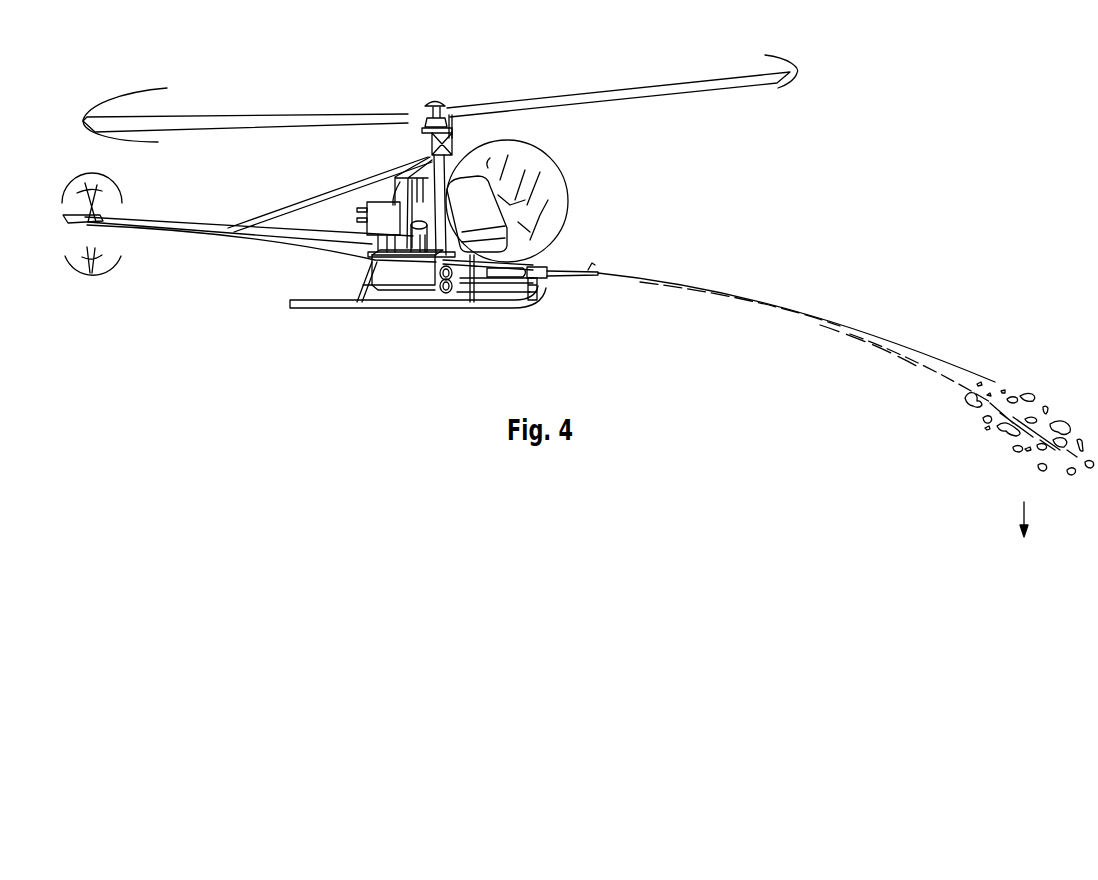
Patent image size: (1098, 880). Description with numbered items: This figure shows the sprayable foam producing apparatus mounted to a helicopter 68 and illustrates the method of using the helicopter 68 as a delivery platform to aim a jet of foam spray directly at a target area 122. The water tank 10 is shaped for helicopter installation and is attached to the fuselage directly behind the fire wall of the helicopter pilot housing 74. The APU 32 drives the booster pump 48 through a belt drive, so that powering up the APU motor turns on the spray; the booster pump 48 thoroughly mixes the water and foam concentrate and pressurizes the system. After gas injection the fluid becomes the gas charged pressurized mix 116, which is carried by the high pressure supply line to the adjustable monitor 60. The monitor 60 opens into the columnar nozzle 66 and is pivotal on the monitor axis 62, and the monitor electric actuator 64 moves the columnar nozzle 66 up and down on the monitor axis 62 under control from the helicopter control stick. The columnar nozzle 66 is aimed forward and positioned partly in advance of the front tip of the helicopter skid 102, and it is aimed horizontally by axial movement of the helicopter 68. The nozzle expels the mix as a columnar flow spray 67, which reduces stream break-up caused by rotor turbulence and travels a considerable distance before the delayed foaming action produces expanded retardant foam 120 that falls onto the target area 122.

The water tank 10 is at (388, 273).
The APU 32 is at (438, 283).
The booster pump 48 is at (445, 294).
The adjustable monitor 60 is at (545, 270).
The monitor axis 62 is at (535, 301).
The monitor electric actuator 64 is at (515, 280).
The columnar nozzle 66 is at (590, 278).
The columnar flow spray 67 is at (680, 288).
The helicopter 68 is at (298, 257).
The helicopter pilot housing 74 is at (545, 157).
The helicopter skid 102 is at (372, 308).
The gas charged pressurized mix 116 is at (870, 332).
The expanded retardant foam 120 is at (962, 367).
The target area 122 is at (1018, 534).